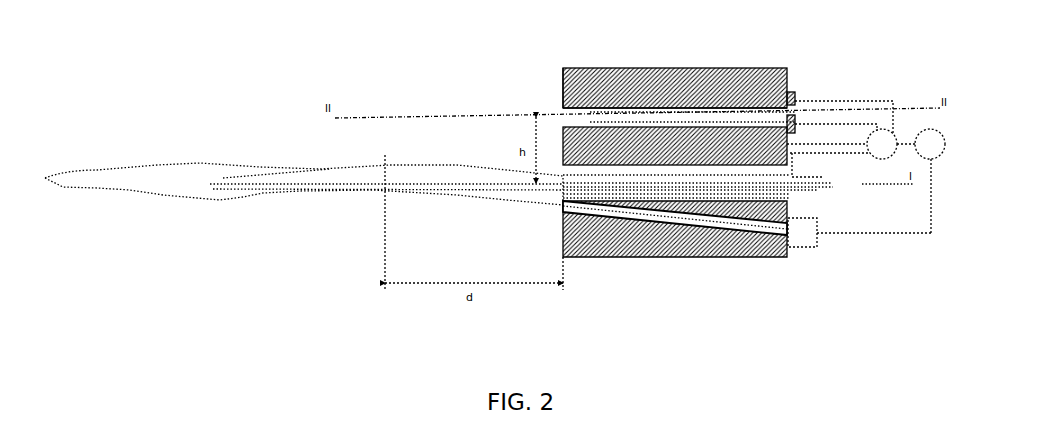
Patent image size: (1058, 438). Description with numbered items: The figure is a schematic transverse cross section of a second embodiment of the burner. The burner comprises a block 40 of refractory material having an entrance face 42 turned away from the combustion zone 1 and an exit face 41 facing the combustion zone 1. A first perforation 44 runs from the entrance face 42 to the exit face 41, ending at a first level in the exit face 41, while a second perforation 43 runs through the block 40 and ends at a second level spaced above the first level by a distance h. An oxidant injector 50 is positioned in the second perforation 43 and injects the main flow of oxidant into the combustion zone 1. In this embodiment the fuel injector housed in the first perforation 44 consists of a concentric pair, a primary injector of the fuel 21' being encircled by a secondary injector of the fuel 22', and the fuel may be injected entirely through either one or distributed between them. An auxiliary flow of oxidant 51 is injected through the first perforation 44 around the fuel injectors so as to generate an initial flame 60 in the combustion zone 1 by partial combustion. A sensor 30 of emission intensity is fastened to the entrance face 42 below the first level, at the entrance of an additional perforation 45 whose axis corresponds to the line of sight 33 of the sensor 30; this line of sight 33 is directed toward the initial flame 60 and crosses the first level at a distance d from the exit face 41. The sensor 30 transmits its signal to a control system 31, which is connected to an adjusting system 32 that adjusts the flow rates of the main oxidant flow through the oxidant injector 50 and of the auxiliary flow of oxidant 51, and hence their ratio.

The combustion zone 1 is at (304, 168).
The primary injector of the fuel 21' is at (738, 192).
The secondary injector of the fuel 22' is at (711, 200).
The sensor of emission intensity 30 is at (859, 232).
The control system 31 is at (921, 181).
The adjusting system 32 is at (842, 139).
The line of sight 33 is at (745, 222).
The block 40 is at (752, 90).
The exit face 41 is at (563, 83).
The entrance face 42 is at (792, 86).
The second perforation 43 is at (710, 100).
The first perforation 44 is at (670, 165).
The additional perforation 45 is at (645, 222).
The oxidant injector 50 is at (613, 107).
The auxiliary flow of oxidant 51 is at (676, 195).
The initial flame 60 is at (399, 222).